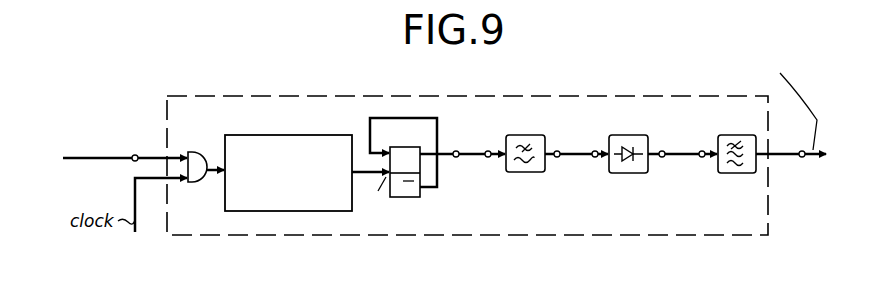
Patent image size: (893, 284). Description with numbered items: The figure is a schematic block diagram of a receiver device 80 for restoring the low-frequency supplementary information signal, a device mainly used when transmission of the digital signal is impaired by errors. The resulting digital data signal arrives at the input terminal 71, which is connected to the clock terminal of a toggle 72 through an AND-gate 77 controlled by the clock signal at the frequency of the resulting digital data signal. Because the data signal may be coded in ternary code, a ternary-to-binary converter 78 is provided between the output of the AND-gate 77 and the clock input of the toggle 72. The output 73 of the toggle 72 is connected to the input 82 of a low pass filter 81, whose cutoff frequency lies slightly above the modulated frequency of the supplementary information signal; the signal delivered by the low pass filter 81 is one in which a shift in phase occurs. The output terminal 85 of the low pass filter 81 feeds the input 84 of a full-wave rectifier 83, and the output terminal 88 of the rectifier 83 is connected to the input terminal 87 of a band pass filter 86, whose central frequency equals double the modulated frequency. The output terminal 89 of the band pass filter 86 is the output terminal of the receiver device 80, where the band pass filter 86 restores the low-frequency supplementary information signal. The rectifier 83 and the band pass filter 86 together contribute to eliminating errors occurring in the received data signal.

The input terminal 71 is at (132, 160).
The toggle 72 is at (398, 198).
The output of the toggle 73 is at (456, 150).
The AND-gate 77 is at (197, 150).
The ternary-to-binary converter 78 is at (281, 134).
The receiver device 80 is at (403, 96).
The low pass filter 81 is at (525, 134).
The input of the low pass filter 82 is at (487, 158).
The full-wave rectifier 83 is at (628, 134).
The input of the full-wave rectifier 84 is at (594, 158).
The output terminal of the low pass filter 85 is at (557, 150).
The band pass filter 86 is at (736, 134).
The input terminal of the band pass filter 87 is at (700, 160).
The output terminal of the rectifier 88 is at (662, 150).
The output terminal of the band pass filter 89 is at (802, 151).